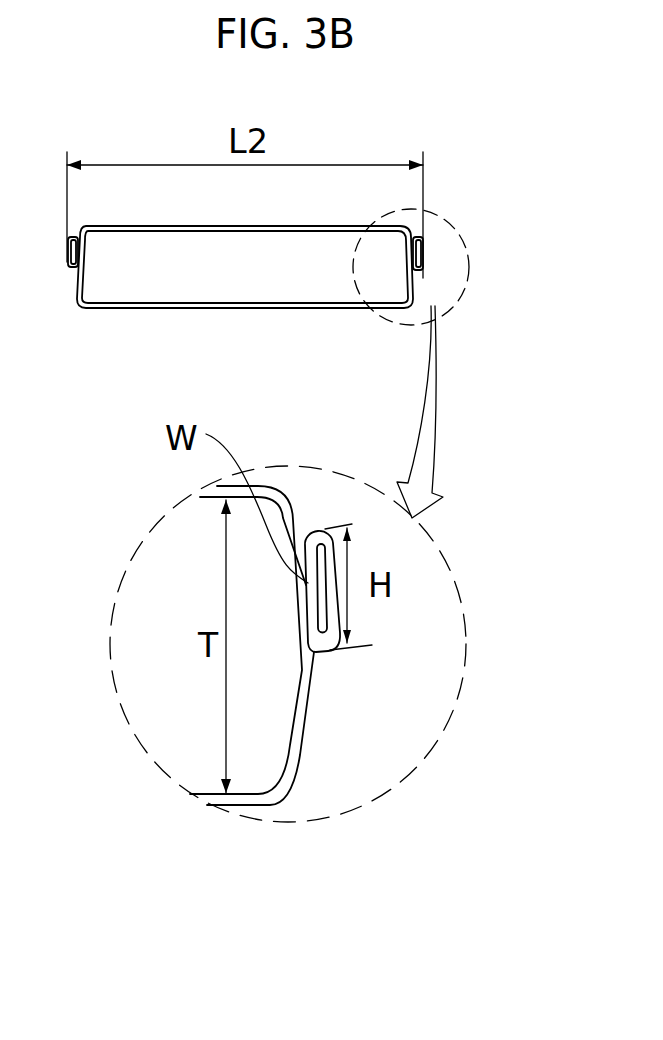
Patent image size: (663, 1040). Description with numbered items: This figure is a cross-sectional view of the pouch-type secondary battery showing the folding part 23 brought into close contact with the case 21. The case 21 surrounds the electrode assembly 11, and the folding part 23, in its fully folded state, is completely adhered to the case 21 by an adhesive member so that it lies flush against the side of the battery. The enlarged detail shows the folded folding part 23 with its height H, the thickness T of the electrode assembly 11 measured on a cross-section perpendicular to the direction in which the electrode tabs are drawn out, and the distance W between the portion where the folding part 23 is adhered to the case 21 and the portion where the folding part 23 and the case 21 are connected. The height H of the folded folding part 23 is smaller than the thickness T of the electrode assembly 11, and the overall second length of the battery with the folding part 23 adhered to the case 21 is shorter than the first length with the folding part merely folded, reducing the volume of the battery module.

The electrode assembly 11 is at (148, 284).
The case 21 is at (210, 308).
The folding part 23 is at (330, 653).